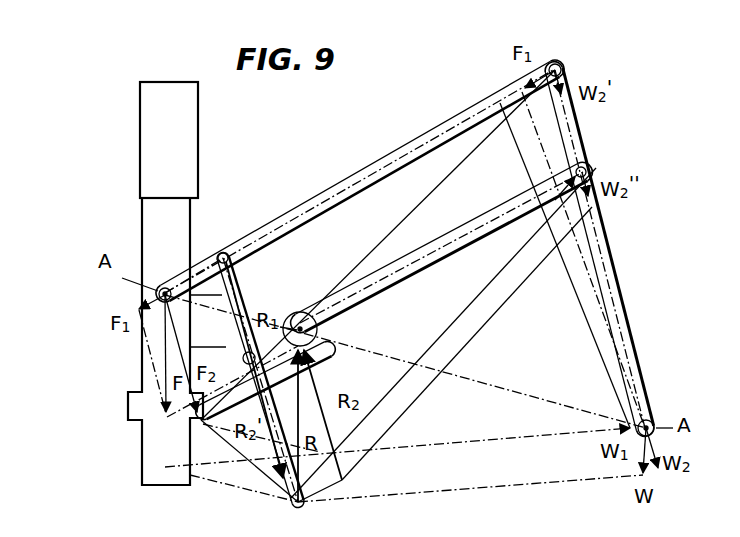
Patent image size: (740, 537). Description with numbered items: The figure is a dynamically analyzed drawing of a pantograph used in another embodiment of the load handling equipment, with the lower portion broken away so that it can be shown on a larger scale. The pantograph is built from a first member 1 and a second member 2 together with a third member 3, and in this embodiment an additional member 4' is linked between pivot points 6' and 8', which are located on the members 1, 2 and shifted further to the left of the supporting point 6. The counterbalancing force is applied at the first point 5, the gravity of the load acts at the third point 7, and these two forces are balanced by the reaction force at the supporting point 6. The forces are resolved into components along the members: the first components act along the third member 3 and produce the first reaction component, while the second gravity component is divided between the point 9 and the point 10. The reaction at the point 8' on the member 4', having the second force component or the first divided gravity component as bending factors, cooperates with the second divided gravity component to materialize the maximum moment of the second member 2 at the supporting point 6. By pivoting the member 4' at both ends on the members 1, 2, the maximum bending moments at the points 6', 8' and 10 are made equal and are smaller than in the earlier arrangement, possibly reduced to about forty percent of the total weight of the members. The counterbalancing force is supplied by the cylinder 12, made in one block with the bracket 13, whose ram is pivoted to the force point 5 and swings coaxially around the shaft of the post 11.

The first member 1 is at (358, 172).
The second member 2 is at (434, 265).
The third member 3 is at (621, 283).
The member 4' is at (260, 379).
The first point 5 is at (188, 270).
The supporting point 6 is at (301, 308).
The pivot point 6' is at (226, 341).
The third point 7 is at (655, 420).
The pivot point 8' is at (236, 234).
The point 9 is at (565, 69).
The point 10 is at (588, 166).
The post 11 is at (148, 458).
The cylinder 12 is at (186, 126).
The bracket 13 is at (152, 232).